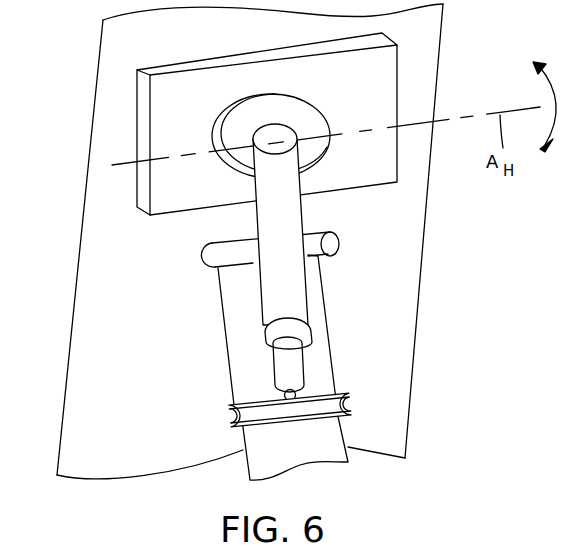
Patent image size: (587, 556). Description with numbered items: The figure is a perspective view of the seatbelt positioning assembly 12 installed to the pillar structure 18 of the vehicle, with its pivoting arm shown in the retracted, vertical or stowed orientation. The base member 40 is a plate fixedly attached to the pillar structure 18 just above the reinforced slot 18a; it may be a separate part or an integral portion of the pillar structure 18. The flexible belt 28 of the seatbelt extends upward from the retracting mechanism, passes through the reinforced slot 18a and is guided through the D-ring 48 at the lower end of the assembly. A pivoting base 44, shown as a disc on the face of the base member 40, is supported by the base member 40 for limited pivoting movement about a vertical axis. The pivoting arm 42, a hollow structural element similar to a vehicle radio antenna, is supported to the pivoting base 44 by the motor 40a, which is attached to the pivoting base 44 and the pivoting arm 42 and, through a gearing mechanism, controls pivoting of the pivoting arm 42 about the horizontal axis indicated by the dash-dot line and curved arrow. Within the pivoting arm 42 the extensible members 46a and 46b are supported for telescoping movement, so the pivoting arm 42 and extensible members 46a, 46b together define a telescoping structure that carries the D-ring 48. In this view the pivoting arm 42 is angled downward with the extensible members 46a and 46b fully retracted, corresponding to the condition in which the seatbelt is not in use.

The seatbelt positioning assembly 12 is at (127, 118).
The pillar structure 18 is at (117, 305).
The reinforced slot 18a is at (335, 243).
The flexible belt 28 is at (238, 313).
The base member 40 is at (372, 78).
The motor 40a is at (277, 135).
The pivoting arm 42 is at (283, 215).
The pivoting base 44 is at (248, 117).
The extensible member 46a is at (293, 328).
The extensible member 46b is at (288, 368).
The D-ring 48 is at (222, 410).